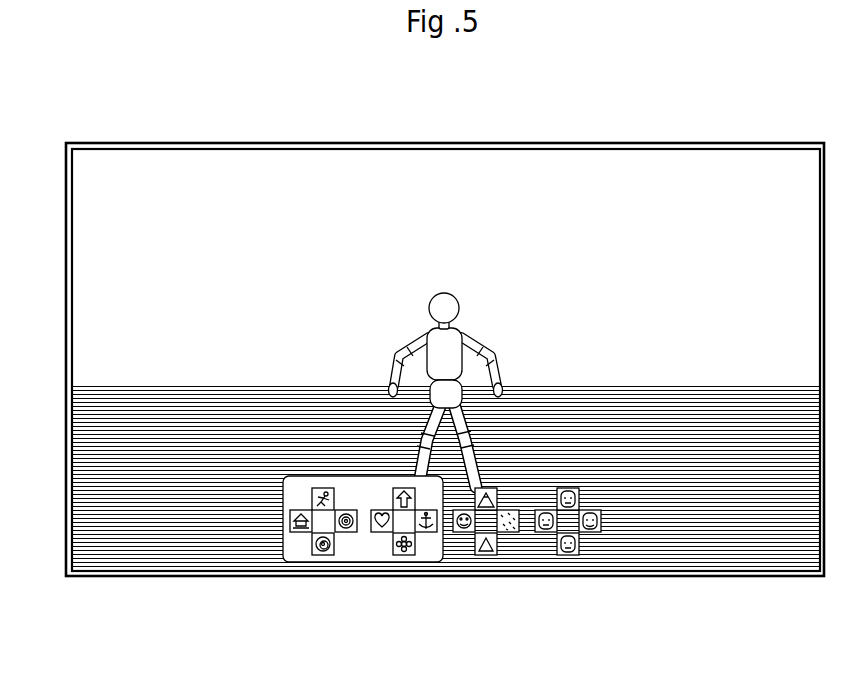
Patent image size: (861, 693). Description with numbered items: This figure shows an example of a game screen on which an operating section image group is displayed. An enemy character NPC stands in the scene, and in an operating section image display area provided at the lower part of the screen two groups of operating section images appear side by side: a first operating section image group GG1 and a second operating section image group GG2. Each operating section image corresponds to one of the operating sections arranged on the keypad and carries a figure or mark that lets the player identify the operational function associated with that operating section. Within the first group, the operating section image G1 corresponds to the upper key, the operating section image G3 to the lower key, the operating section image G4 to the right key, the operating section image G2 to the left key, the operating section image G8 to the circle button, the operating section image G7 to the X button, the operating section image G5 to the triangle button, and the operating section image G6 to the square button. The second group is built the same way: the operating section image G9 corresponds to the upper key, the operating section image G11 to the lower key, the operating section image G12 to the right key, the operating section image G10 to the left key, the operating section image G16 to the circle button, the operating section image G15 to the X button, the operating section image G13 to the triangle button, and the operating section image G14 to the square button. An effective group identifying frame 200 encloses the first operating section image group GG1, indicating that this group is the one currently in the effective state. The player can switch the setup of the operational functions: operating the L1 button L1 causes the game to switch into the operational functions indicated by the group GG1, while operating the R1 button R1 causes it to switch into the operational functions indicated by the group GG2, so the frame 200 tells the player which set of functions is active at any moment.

The effective group identifying frame 200 is at (283, 480).
The enemy character NPC is at (443, 292).
The L1 button L1 is at (363, 519).
The R1 button R1 is at (514, 579).
The first operating section image group GG1 is at (427, 638).
The second operating section image group GG2 is at (598, 638).
The operating section image G1 is at (311, 498).
The operating section image G2 is at (301, 534).
The operating section image G3 is at (323, 556).
The operating section image G4 is at (346, 534).
The operating section image G5 is at (392, 499).
The operating section image G6 is at (377, 534).
The operating section image G7 is at (404, 556).
The operating section image G8 is at (427, 534).
The operating section image G9 is at (474, 499).
The operating section image G10 is at (463, 534).
The operating section image G11 is at (486, 556).
The operating section image G12 is at (508, 534).
The operating section image G13 is at (556, 499).
The operating section image G14 is at (546, 534).
The operating section image G15 is at (567, 556).
The operating section image G16 is at (590, 534).